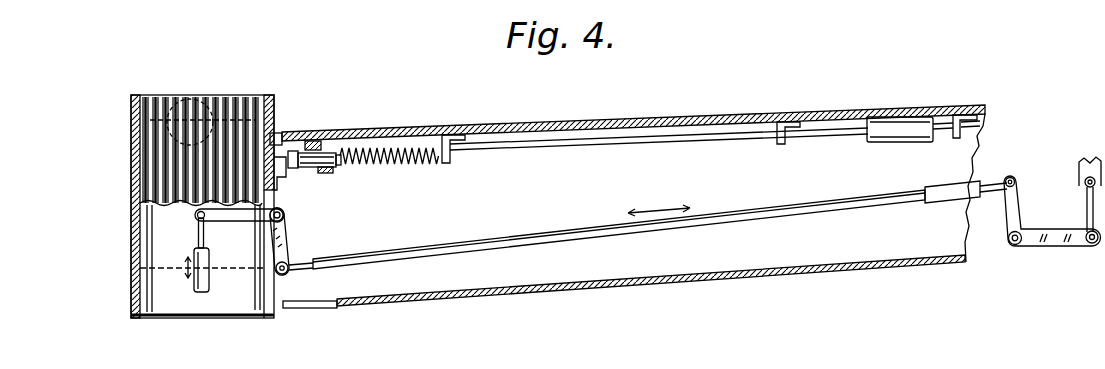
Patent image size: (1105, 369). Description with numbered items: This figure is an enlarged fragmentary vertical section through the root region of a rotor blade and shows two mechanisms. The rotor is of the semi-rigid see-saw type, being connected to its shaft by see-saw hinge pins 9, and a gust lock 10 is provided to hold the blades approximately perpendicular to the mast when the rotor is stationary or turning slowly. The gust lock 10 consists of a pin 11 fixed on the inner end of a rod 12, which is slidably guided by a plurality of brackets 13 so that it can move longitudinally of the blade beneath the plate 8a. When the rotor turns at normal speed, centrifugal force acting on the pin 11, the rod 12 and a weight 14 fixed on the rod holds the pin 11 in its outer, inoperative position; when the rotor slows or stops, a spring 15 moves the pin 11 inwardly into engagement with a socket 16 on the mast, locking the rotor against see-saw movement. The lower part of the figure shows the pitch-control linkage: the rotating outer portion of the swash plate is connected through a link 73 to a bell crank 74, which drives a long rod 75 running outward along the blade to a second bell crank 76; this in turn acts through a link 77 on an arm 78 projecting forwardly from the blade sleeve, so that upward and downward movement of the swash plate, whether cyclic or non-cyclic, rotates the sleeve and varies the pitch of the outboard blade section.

The see-saw hinge pins 9 is at (196, 96).
The top plate 8a is at (600, 119).
The gust lock 10 is at (347, 171).
The pin 11 is at (315, 168).
The rod 12 is at (521, 148).
The brackets 13 is at (327, 175).
The weight 14 is at (894, 141).
The spring 15 is at (397, 163).
The socket 16 is at (294, 170).
The link 73 is at (208, 281).
The bell crank 74 is at (290, 243).
The rod 75 is at (518, 236).
The bell crank 76 is at (1036, 249).
The link 77 is at (1087, 210).
The arm 78 is at (1083, 176).